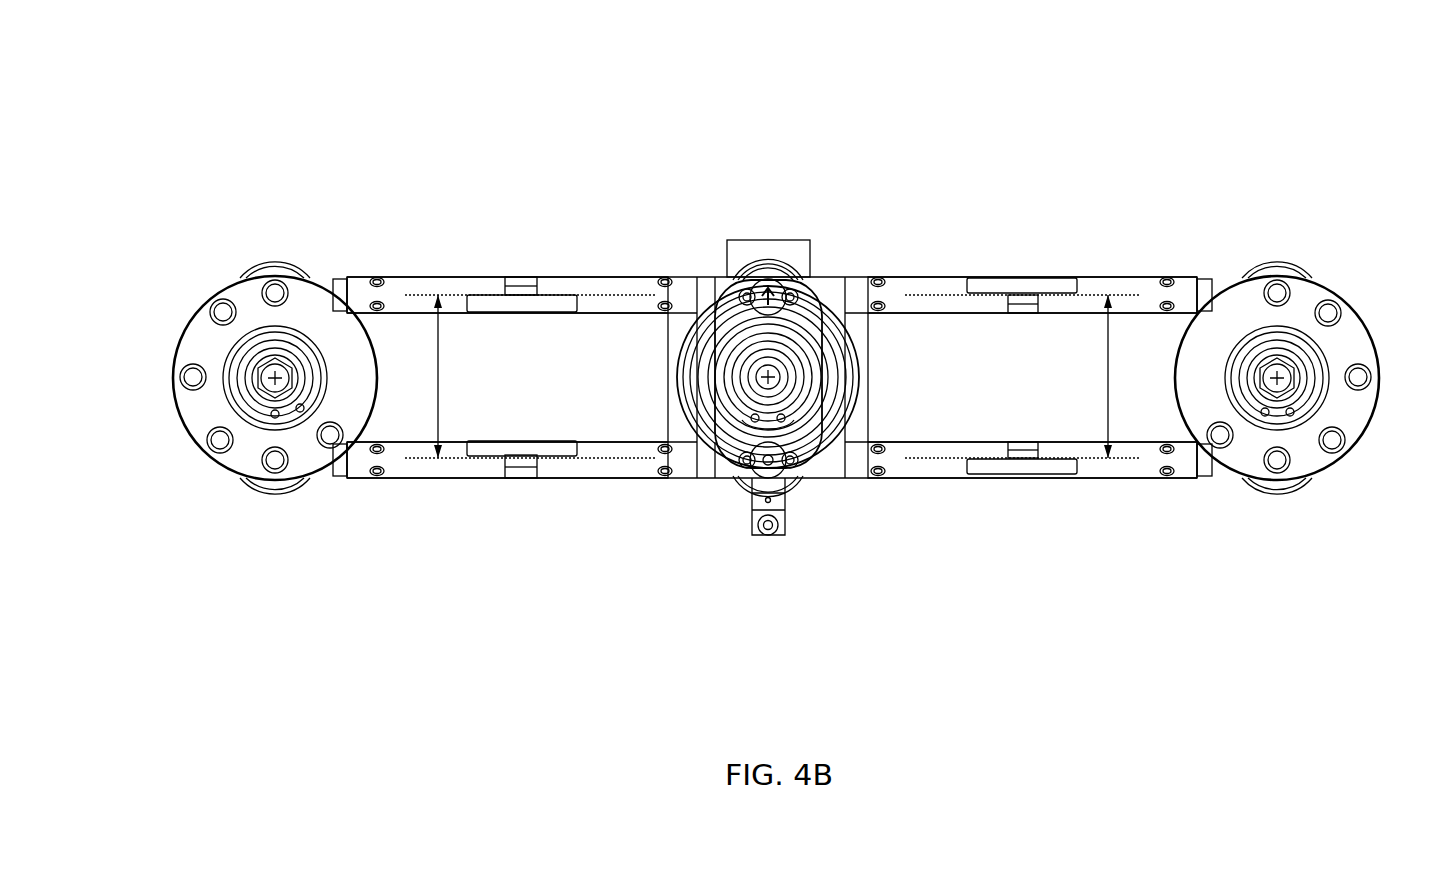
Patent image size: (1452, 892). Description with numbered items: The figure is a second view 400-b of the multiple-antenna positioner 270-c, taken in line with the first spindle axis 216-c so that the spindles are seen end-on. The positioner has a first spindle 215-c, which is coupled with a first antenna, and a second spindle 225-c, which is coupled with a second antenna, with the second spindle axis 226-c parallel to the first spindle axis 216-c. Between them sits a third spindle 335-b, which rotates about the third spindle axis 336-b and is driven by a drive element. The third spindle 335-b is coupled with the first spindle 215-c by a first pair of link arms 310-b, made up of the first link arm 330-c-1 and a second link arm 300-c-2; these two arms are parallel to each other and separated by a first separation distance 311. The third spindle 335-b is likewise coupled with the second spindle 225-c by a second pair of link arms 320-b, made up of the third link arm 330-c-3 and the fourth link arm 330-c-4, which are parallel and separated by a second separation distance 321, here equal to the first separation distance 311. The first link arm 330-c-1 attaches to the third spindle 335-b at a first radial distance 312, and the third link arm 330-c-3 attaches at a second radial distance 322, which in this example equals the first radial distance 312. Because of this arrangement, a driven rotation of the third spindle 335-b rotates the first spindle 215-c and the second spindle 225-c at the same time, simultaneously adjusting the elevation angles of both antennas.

The second view 400-b is at (1050, 72).
The multiple-antenna positioner 270-c is at (697, 670).
The first pair of link arms 310-b is at (505, 540).
The second pair of link arms 320-b is at (1000, 545).
The first link arm 330-c-1 is at (582, 277).
The third link arm 330-c-3 is at (923, 277).
The fourth link arm 330-c-4 is at (918, 440).
The second rail segment 300-c-2 is at (575, 440).
The first separation distance 311 is at (437, 376).
The second separation distance 321 is at (1106, 376).
The first radial distance 312 is at (808, 368).
The second radial distance 322 is at (815, 377).
The third spindle axis 336-b is at (768, 377).
The third spindle 335-b is at (740, 478).
The first spindle 215-c is at (225, 467).
The first spindle axis 216-c is at (275, 378).
The second spindle 225-c is at (1240, 478).
The second spindle axis 226-c is at (1277, 378).